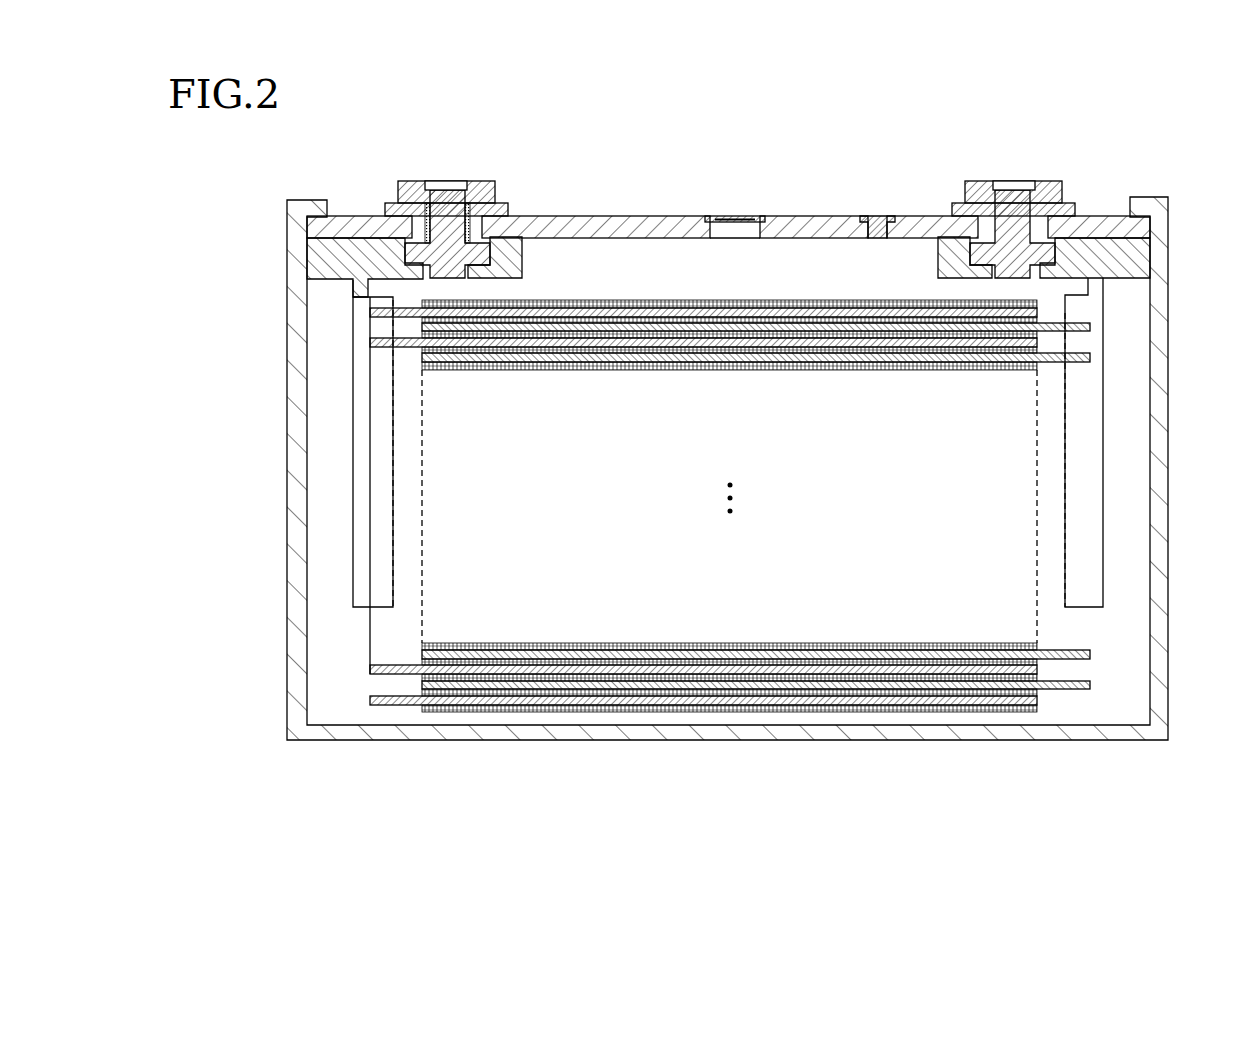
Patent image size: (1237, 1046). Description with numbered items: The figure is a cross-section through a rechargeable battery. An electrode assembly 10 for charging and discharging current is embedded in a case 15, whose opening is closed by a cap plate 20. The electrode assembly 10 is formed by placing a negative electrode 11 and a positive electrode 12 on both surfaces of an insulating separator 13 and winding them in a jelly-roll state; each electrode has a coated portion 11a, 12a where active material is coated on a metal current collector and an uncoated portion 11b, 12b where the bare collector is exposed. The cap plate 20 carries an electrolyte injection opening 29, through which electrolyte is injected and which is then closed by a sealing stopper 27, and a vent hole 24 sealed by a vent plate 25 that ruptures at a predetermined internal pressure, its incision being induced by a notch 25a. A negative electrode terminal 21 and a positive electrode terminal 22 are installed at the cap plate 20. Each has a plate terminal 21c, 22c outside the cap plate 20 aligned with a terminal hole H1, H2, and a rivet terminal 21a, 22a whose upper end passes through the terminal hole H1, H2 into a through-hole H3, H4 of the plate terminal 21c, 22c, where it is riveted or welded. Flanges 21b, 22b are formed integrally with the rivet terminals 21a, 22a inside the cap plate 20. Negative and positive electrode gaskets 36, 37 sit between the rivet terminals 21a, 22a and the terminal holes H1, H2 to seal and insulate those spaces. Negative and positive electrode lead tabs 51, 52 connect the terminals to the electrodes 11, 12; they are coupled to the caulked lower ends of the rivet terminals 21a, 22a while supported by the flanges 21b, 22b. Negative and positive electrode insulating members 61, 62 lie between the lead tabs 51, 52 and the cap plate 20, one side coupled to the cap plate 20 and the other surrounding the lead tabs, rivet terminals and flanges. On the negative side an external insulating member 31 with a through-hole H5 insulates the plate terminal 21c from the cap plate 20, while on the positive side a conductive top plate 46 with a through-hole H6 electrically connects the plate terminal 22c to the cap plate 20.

The electrode assembly 10 is at (736, 567).
The negative electrode 11 is at (703, 571).
The coated portion 11a is at (385, 795).
The uncoated portion 11b is at (397, 708).
The positive electrode 12 is at (762, 578).
The coated portion 12a is at (958, 690).
The uncoated portion 12b is at (950, 795).
The separator 13 is at (675, 680).
The case 15 is at (1166, 396).
The cap plate 20 is at (805, 226).
The negative electrode terminal 21 is at (447, 178).
The rivet terminal 21a is at (448, 258).
The flange 21b is at (505, 258).
The plate terminal 21c is at (480, 184).
The positive electrode terminal 22 is at (1012, 178).
The rivet terminal 22a is at (1015, 262).
The flange 22b is at (945, 256).
The plate terminal 22c is at (1052, 184).
The vent hole 24 is at (737, 233).
The vent plate 25 is at (757, 216).
The notch 25a is at (722, 216).
The sealing stopper 27 is at (882, 222).
The electrolyte injection opening 29 is at (872, 218).
The external insulating member 31 is at (418, 202).
The negative electrode gasket 36 is at (398, 210).
The positive electrode gasket 37 is at (962, 209).
The conductive top plate 46 is at (1076, 210).
The negative electrode lead tab 51 is at (351, 416).
The positive electrode lead tab 52 is at (1105, 570).
The negative electrode insulating member 61 is at (330, 256).
The positive electrode insulating member 62 is at (1130, 256).
The terminal hole H1 is at (426, 190).
The terminal hole H2 is at (992, 190).
The through-hole H3 is at (467, 190).
The through-hole H4 is at (1032, 190).
The through-hole H5 is at (497, 205).
The through-hole H6 is at (1065, 205).